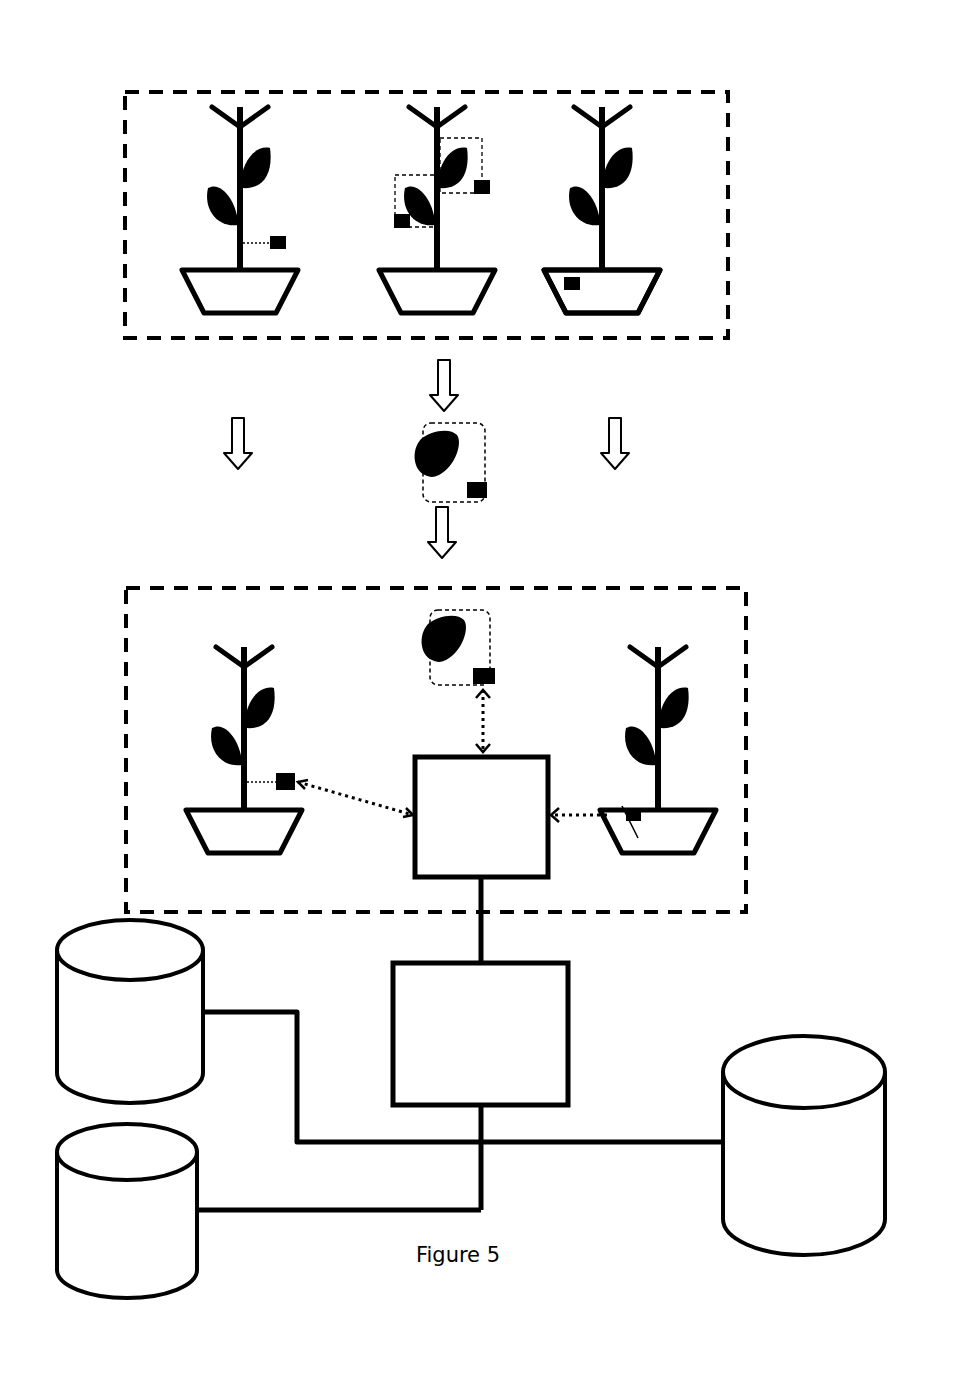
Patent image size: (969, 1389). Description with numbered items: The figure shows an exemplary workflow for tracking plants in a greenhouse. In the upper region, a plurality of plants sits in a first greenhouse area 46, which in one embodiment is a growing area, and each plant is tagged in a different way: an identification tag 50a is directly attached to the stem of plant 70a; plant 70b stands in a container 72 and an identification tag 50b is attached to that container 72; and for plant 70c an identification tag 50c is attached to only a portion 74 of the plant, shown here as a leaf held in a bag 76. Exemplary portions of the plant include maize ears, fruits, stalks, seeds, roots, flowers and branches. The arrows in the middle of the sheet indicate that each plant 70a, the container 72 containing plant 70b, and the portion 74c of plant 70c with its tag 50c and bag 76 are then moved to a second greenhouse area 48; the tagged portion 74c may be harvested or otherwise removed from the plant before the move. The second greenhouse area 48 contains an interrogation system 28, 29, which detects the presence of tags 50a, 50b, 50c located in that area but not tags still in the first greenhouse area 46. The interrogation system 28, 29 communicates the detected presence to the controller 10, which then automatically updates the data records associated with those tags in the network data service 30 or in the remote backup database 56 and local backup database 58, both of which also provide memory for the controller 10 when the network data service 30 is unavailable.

The controller 10 is at (470, 1062).
The interrogation system 28 is at (469, 801).
The interrogation system 29 is at (469, 858).
The network data service 30 is at (795, 1212).
The first greenhouse area 46 is at (740, 278).
The second greenhouse area 48 is at (755, 688).
The identification tag 50a is at (286, 245).
The identification tag 50b is at (566, 284).
The identification tag 50c is at (394, 222).
The remote backup database 56 is at (121, 1091).
The local backup database 58 is at (118, 1291).
The plant 70a is at (256, 84).
The plant 70b is at (617, 84).
The plant 70c is at (439, 84).
The container 72 is at (641, 294).
The portion of the plant 74 is at (214, 207).
The portion of the plant 74c is at (424, 462).
The bag 76 is at (396, 176).